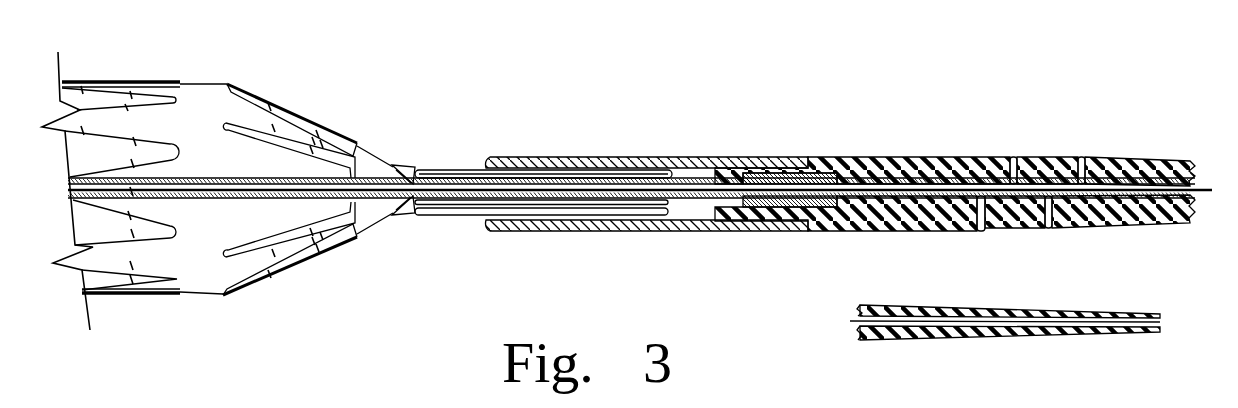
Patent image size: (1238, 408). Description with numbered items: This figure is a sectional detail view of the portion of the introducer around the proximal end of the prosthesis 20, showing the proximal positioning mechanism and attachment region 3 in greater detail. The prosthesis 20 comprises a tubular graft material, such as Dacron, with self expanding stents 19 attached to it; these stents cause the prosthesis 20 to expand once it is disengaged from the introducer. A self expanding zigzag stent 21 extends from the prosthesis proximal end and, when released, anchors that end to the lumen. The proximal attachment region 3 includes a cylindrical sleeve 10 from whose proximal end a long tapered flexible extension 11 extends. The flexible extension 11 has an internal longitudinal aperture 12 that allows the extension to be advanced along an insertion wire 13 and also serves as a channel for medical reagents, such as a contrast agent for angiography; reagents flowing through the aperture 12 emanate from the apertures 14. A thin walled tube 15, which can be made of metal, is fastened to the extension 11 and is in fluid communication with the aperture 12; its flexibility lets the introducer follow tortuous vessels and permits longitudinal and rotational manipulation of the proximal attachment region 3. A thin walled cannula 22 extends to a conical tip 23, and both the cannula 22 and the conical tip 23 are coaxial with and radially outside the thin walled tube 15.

The proximal positioning mechanism and attachment region 3 is at (627, 188).
The cylindrical sleeve 10 is at (562, 157).
The tapered flexible extension 11 is at (928, 158).
The internal longitudinal aperture 12 is at (966, 198).
The insertion wire 13 is at (1205, 190).
The apertures 14 is at (1082, 158).
The thin walled tube 15 is at (202, 200).
The self expanding stents 19 is at (107, 93).
The prosthesis 20 is at (203, 110).
The self expanding zigzag stent 21 is at (457, 170).
The thin walled cannula 22 is at (363, 178).
The conical tip 23 is at (403, 165).